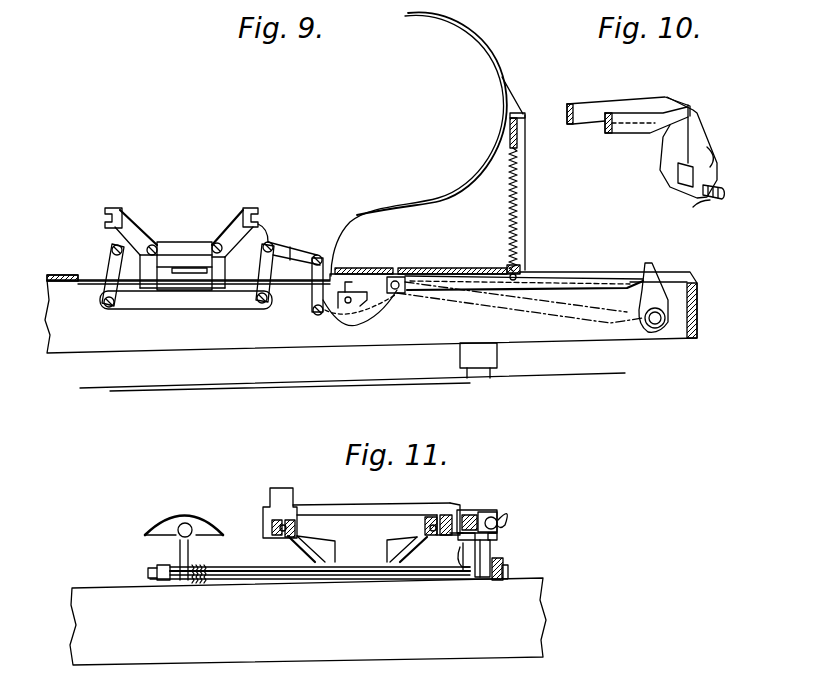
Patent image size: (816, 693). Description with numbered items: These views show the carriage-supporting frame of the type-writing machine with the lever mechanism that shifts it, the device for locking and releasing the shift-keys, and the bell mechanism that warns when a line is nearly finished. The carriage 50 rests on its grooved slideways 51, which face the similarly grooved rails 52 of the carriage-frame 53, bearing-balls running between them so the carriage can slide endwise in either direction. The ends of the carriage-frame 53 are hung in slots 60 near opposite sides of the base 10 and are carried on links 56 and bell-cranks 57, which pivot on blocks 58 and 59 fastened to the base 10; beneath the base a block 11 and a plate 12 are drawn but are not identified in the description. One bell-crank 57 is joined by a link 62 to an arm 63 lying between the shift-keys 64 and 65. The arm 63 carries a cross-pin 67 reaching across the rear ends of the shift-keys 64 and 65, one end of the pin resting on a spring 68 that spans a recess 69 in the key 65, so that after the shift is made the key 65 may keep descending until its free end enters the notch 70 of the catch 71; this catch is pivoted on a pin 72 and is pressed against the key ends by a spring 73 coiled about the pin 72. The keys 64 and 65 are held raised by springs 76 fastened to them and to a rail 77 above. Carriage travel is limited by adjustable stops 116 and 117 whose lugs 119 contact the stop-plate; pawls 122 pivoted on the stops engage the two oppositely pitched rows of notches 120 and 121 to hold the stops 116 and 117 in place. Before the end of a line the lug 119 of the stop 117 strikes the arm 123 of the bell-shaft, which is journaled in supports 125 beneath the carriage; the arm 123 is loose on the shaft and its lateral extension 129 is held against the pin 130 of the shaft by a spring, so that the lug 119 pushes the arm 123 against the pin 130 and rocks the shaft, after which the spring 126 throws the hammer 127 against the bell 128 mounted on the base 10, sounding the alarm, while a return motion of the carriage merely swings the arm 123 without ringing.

In FIG. 9, the base 10 is at (513, 265).
In FIG. 11, the base 10 is at (308, 621).
In FIG. 9, the support block 11 is at (493, 356).
In FIG. 9, the ground plate 12 is at (490, 373).
In FIG. 11, the ground plate 12 is at (430, 572).
In FIG. 11, the carriage 50 is at (367, 507).
In FIG. 11, the slideways 51 is at (270, 523).
In FIG. 9, the grooved rails 52 is at (120, 211).
In FIG. 11, the grooved rails 52 is at (295, 523).
In FIG. 9, the carriage-frame 53 is at (210, 236).
In FIG. 11, the carriage-frame 53 is at (323, 548).
In FIG. 9, the links 56 is at (103, 291).
In FIG. 9, the bell-cranks 57 is at (270, 290).
In FIG. 9, the blocks 58 is at (98, 260).
In FIG. 9, the blocks 59 is at (260, 240).
In FIG. 9, the slots 60 is at (81, 276).
In FIG. 9, the link 62 is at (312, 292).
In FIG. 9, the arm 63 is at (318, 315).
In FIG. 10, the shift-key 64 is at (580, 125).
In FIG. 9, the shift-key 65 is at (540, 280).
In FIG. 10, the shift-key 65 is at (625, 130).
In FIG. 9, the cross-pin 67 is at (349, 297).
In FIG. 9, the spring 68 is at (338, 303).
In FIG. 9, the recess 69 is at (357, 313).
In FIG. 10, the notch 70 is at (680, 190).
In FIG. 9, the catch 71 is at (653, 278).
In FIG. 10, the catch 71 is at (698, 137).
In FIG. 10, the pin 72 is at (727, 195).
In FIG. 9, the spring 73 is at (660, 330).
In FIG. 10, the spring 73 is at (715, 162).
In FIG. 9, the springs 76 is at (516, 213).
In FIG. 9, the rail 77 is at (518, 132).
In FIG. 9, the stop 116 is at (498, 70).
In FIG. 11, the stop 117 is at (475, 510).
In FIG. 11, the lugs 119 is at (460, 550).
In FIG. 11, the notches 120 is at (497, 515).
In FIG. 11, the notches 121 is at (497, 538).
In FIG. 11, the pawls 122 is at (508, 515).
In FIG. 11, the arm 123 is at (492, 545).
In FIG. 11, the supports 125 is at (162, 585).
In FIG. 11, the spring 126 is at (200, 572).
In FIG. 11, the hammer 127 is at (190, 545).
In FIG. 11, the bell 128 is at (195, 513).
In FIG. 11, the lateral extension 129 is at (460, 537).
In FIG. 11, the pin 130 is at (467, 568).